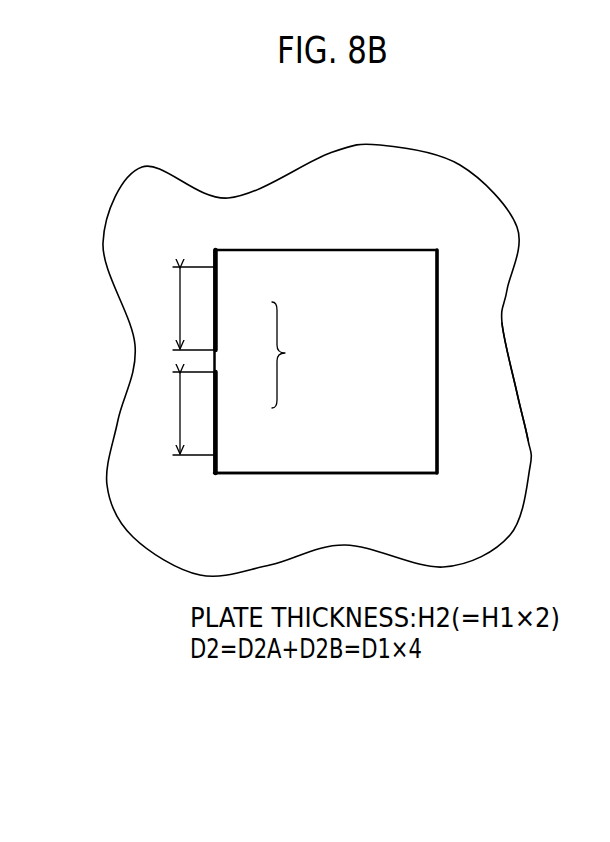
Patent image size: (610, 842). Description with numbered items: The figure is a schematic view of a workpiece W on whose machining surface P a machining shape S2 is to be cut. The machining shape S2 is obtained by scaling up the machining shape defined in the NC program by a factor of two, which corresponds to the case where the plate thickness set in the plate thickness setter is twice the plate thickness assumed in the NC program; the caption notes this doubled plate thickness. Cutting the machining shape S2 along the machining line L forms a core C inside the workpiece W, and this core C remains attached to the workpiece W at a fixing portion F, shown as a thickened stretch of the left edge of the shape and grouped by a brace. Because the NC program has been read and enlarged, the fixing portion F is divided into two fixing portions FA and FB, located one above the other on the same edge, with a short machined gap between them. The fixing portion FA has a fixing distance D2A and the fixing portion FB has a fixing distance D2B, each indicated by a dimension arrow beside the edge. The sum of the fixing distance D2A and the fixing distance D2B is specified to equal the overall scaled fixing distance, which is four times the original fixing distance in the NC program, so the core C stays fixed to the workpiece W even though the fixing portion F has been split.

The workpiece W is at (390, 188).
The machining shape S2 is at (417, 232).
The machining surface P is at (482, 403).
The core C is at (287, 268).
The fixing portion FA is at (217, 312).
The fixing portion FB is at (217, 397).
The fixing portion F is at (289, 355).
The machining line L is at (265, 475).
The fixing distance D2A is at (176, 308).
The fixing distance D2B is at (176, 413).